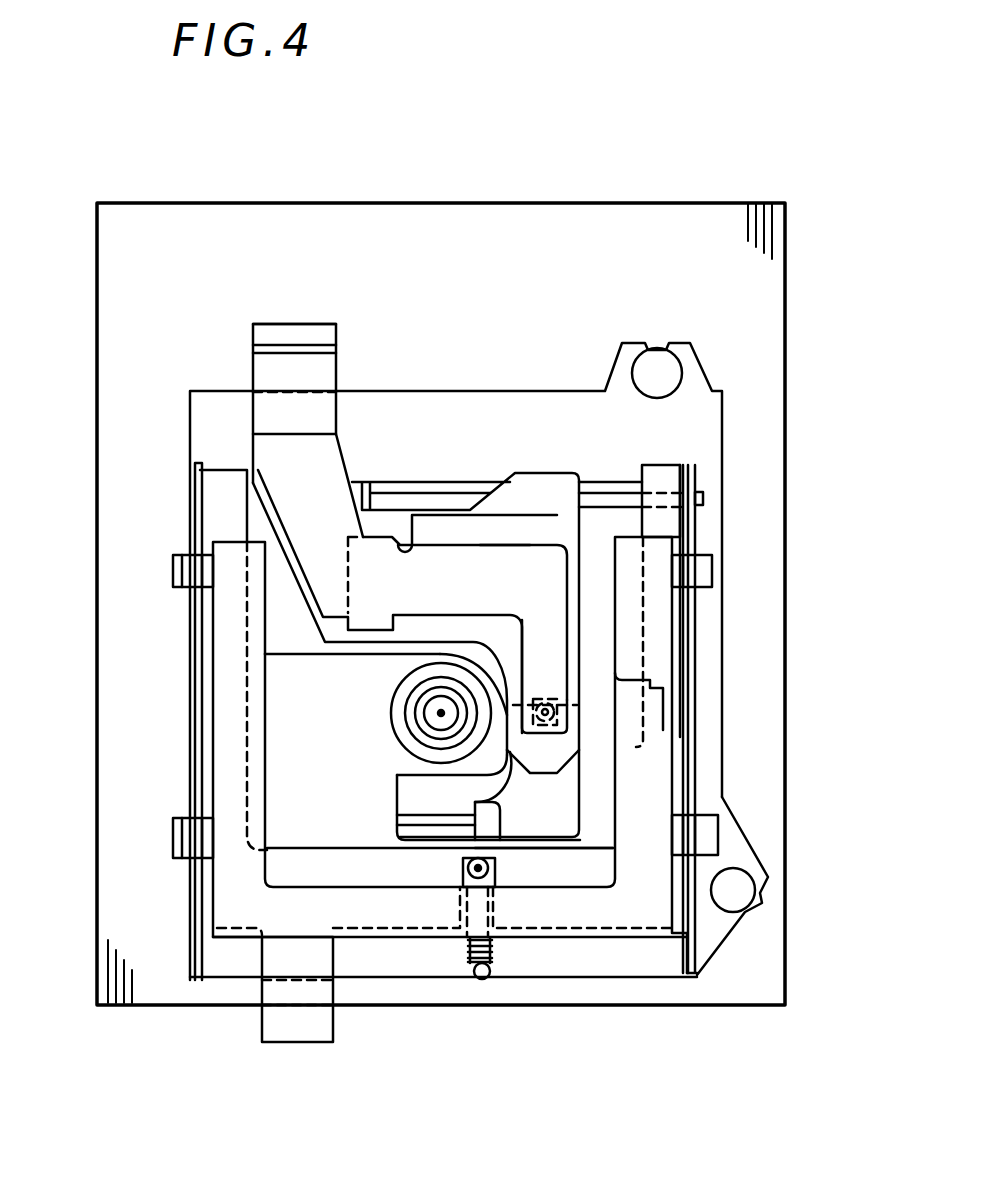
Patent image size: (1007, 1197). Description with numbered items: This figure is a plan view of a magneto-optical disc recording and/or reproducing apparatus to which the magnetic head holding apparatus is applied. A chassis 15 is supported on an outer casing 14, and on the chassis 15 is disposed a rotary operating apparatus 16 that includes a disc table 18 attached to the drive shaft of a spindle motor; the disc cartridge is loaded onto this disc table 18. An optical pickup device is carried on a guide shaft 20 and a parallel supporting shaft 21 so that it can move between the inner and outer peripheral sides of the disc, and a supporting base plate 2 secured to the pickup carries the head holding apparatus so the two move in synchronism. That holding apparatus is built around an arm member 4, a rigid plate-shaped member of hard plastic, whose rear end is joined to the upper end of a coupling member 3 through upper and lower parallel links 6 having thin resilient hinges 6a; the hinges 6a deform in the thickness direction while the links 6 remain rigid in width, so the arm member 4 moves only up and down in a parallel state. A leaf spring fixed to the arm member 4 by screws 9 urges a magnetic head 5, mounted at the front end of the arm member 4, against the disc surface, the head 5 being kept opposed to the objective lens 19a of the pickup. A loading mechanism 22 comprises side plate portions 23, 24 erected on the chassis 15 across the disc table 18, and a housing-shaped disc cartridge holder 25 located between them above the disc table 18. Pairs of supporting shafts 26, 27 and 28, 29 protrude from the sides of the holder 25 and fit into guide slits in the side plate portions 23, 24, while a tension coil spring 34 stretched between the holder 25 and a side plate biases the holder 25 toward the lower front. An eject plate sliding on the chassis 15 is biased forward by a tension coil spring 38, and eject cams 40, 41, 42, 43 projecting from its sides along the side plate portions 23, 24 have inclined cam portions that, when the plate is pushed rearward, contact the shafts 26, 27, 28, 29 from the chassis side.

The supporting base plate 2 is at (355, 637).
The coupling member 3 is at (297, 324).
The arm member 4 is at (455, 562).
The magnetic head 5 is at (541, 735).
The parallel link 6 is at (325, 378).
The resilient hinge 6a is at (323, 343).
The screw 9 is at (517, 817).
The outer casing 14 is at (787, 437).
The chassis 15 is at (713, 690).
The rotary operating apparatus 16 is at (398, 783).
The disc table 18 is at (390, 715).
The objective lens 19a is at (558, 713).
The guide shaft 20 is at (403, 830).
The supporting shaft 21 is at (603, 500).
The loading mechanism 22 is at (608, 965).
The side plate portion 23 is at (195, 982).
The side plate portion 24 is at (703, 962).
The disc cartridge holder 25 is at (397, 917).
The supporting shaft 26 is at (173, 838).
The supporting shaft 27 is at (173, 572).
The supporting shaft 28 is at (715, 847).
The supporting shaft 29 is at (712, 572).
The tension coil spring 34 is at (303, 1045).
The tension coil spring 38 is at (498, 950).
The eject cam 40 is at (205, 893).
The eject cam 41 is at (205, 628).
The eject cam 42 is at (686, 910).
The eject cam 43 is at (683, 618).